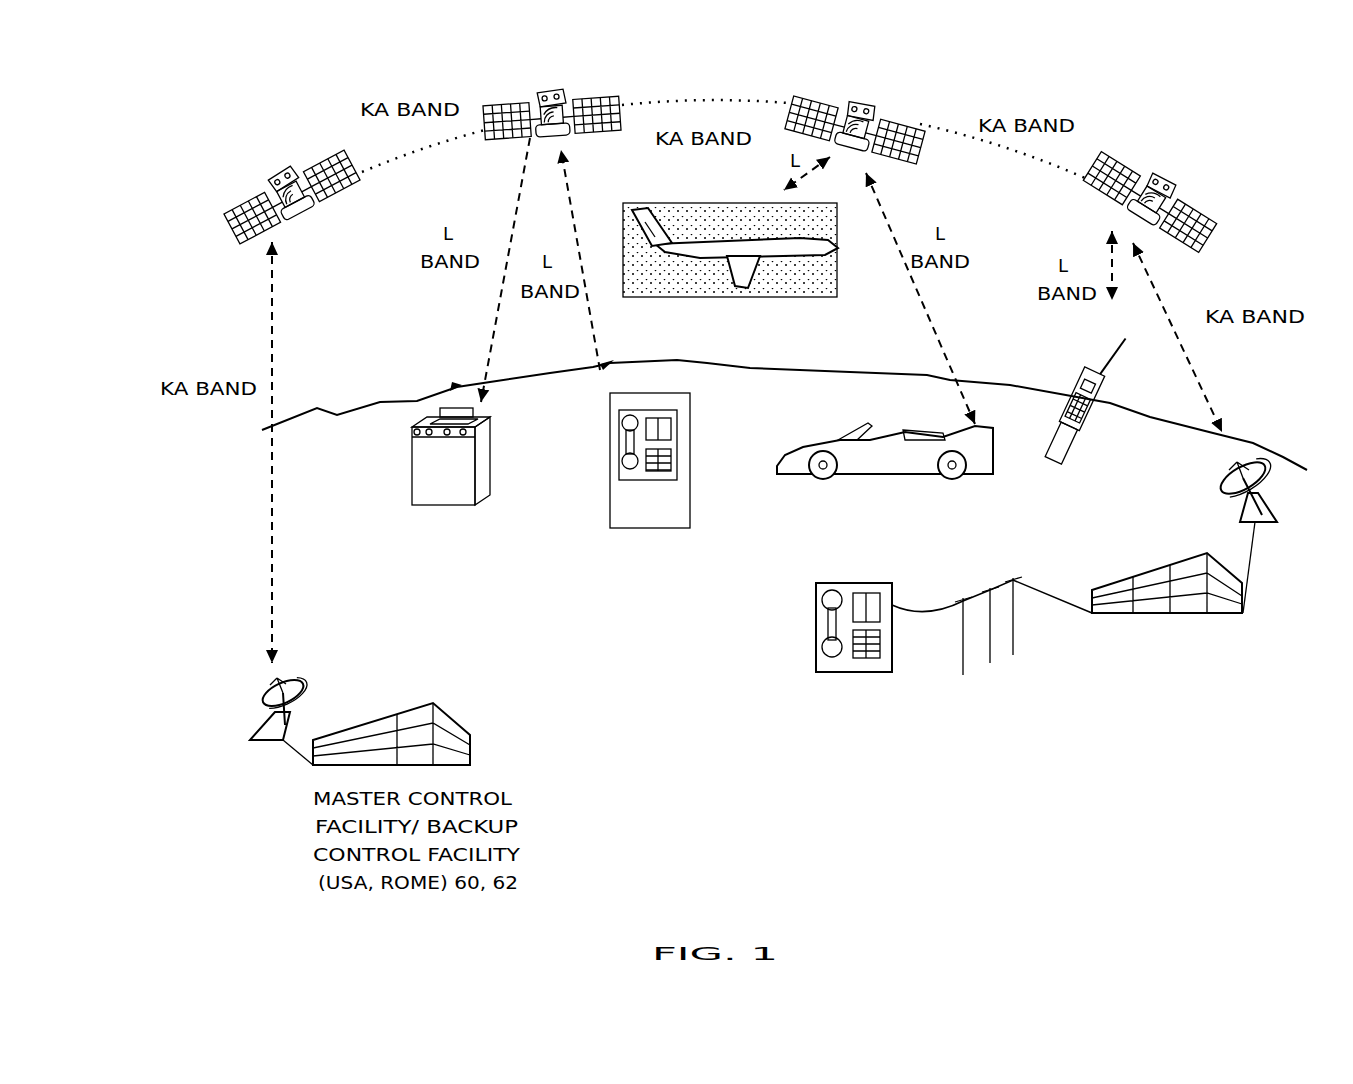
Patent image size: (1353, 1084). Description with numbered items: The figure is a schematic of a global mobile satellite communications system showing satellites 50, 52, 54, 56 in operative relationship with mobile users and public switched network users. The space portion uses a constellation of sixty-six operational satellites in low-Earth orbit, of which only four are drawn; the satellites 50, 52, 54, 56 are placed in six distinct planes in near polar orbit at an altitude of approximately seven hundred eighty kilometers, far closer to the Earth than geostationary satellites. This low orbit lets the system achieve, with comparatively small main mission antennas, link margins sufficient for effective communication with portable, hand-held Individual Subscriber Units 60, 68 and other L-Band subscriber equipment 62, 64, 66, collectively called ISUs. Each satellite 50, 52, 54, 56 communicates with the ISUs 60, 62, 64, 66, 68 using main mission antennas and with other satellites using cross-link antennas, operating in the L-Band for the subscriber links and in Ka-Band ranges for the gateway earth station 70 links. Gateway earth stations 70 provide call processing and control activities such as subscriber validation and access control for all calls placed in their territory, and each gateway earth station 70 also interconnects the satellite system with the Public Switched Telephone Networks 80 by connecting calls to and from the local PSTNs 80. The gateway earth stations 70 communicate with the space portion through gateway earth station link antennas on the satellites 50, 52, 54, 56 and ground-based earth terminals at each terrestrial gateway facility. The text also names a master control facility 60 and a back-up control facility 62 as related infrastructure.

The satellite 50 is at (290, 192).
The satellite 52 is at (551, 123).
The satellite 54 is at (857, 137).
The satellite 56 is at (1155, 208).
The Individual Subscriber Unit 60 is at (1083, 439).
The L-Band subscriber equipment 62 is at (885, 496).
The L-Band subscriber equipment 64 is at (757, 282).
The L-Band subscriber equipment 66 is at (667, 548).
The Individual Subscriber Unit 68 is at (439, 519).
The gateway earth station 70 is at (1188, 570).
The Public Switched Telephone Network 80 is at (919, 672).